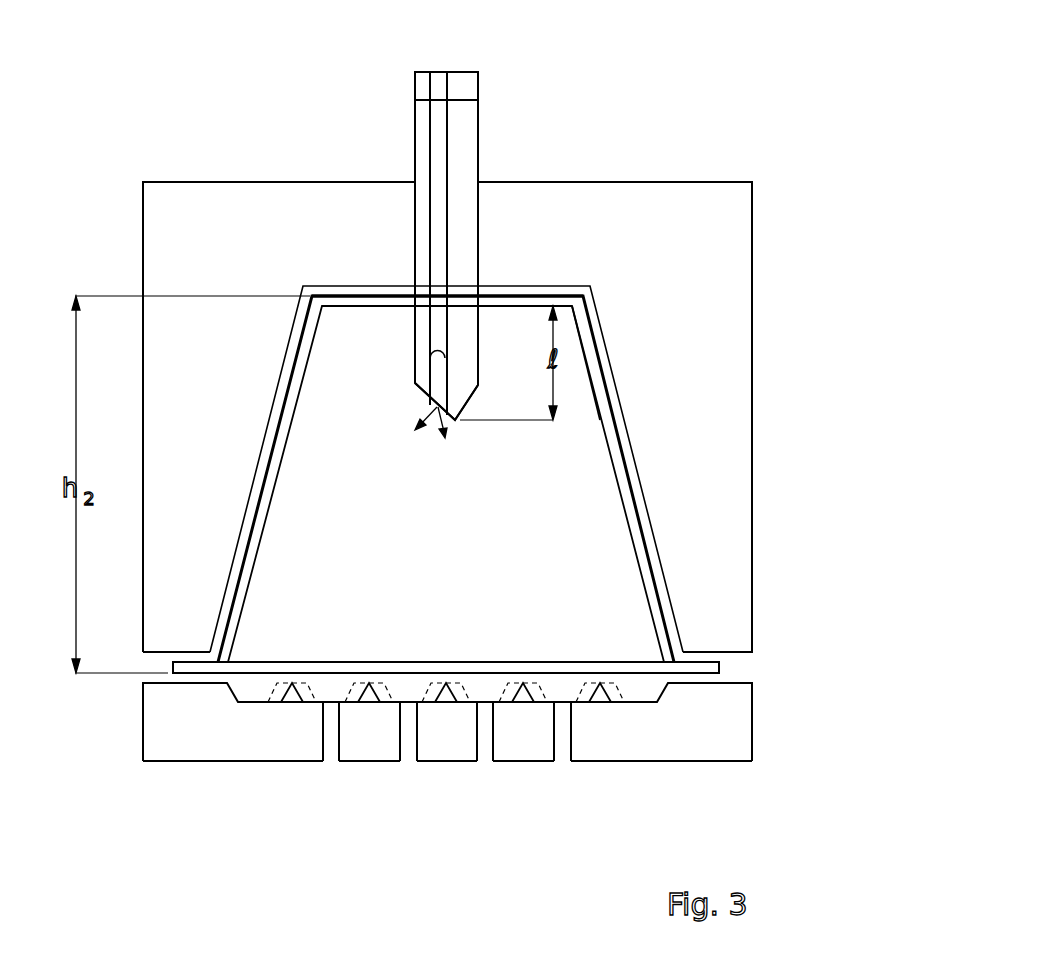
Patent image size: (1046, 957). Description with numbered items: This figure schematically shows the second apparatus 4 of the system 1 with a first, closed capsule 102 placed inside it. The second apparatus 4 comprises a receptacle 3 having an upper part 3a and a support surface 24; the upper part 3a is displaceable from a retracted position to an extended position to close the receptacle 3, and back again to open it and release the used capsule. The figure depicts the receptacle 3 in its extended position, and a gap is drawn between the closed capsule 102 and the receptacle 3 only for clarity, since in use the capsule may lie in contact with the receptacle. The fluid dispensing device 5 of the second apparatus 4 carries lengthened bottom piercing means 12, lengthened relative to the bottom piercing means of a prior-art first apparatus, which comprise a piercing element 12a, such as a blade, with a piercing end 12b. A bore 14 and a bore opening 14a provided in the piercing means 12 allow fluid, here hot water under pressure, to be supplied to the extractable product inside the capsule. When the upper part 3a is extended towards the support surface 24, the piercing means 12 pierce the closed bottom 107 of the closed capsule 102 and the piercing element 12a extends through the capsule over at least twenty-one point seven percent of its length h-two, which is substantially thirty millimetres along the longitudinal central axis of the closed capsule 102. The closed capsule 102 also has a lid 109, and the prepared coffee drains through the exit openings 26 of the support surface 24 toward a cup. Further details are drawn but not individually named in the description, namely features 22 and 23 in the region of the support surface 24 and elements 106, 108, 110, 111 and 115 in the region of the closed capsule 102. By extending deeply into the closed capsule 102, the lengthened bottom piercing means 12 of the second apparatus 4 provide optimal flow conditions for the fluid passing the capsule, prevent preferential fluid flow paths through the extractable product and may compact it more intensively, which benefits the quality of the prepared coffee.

The system 1 is at (756, 78).
The receptacle 3 is at (757, 266).
The upper part 3a is at (692, 230).
The second apparatus 4 is at (752, 380).
The fluid dispensing device 5 is at (479, 80).
The lengthened bottom piercing means 12 is at (479, 168).
The piercing element 12a is at (460, 226).
The piercing end 12b is at (463, 385).
The bore 14 is at (438, 72).
The bore opening 14a is at (437, 352).
The spike 22 is at (292, 692).
The plate 23 is at (502, 668).
The support surface 24 is at (719, 722).
The exit openings 26 is at (331, 730).
The closed capsule 102 is at (635, 497).
The intermediate wall 106 is at (638, 540).
The closed bottom 107 is at (505, 302).
The side wall 108 is at (579, 311).
The lid 109 is at (562, 667).
The lower edge 110 is at (667, 653).
The chamber 111 is at (467, 537).
The inner surface 115 is at (491, 302).